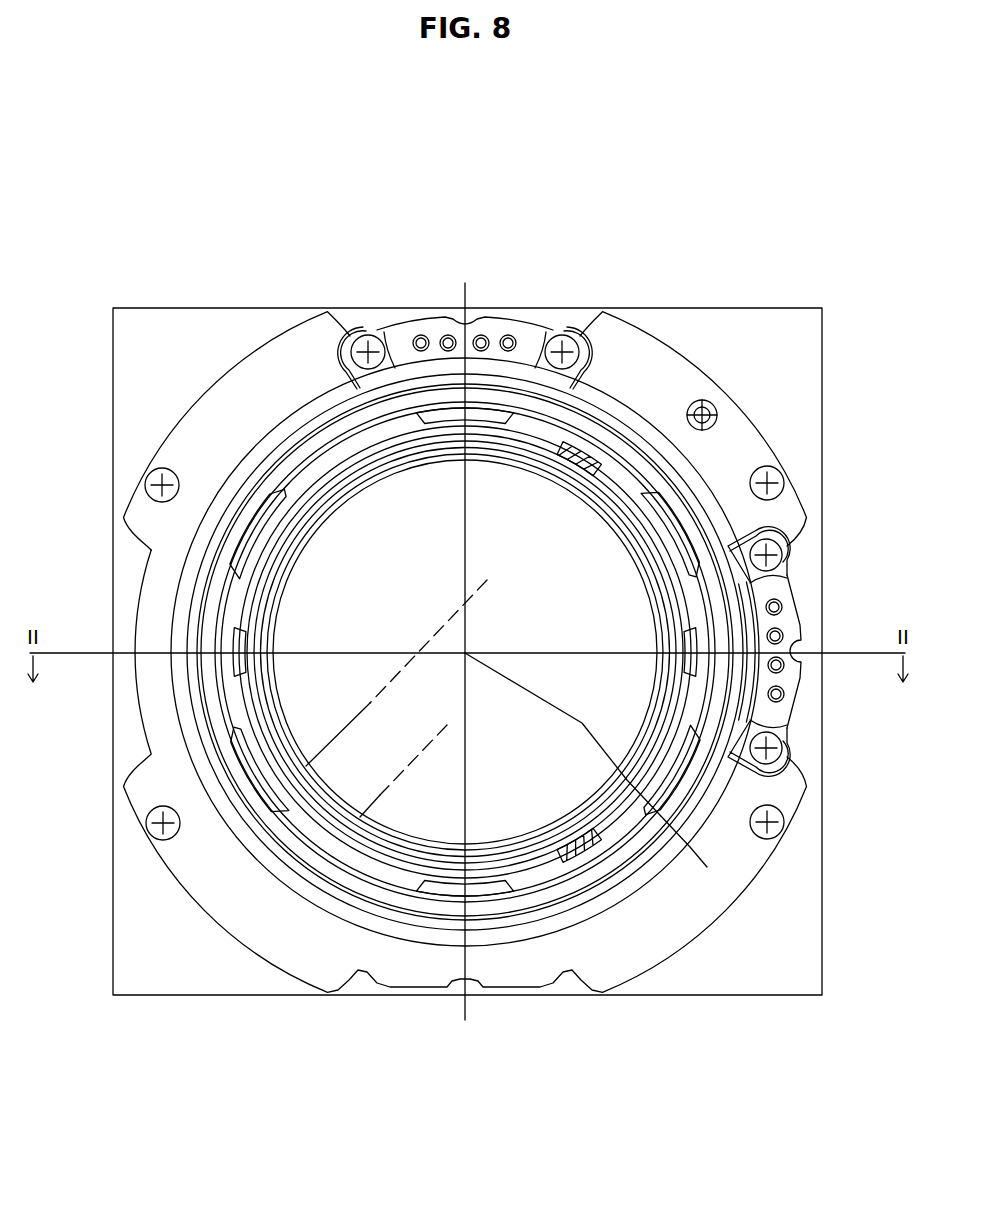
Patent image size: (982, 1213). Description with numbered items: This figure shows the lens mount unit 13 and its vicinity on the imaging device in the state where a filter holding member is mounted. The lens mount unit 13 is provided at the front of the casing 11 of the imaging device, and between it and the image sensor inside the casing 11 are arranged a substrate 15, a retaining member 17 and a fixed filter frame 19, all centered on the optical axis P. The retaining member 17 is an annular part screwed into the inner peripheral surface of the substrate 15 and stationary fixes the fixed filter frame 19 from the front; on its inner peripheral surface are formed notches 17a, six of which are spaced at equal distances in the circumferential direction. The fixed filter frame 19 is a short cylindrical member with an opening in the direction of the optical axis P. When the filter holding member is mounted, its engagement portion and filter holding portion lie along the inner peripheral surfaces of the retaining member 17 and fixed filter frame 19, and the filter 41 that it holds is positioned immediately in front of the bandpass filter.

The casing 11 is at (755, 370).
The lens mount unit 13 is at (727, 437).
The substrate 15 is at (682, 492).
The retaining member 17 is at (716, 606).
The notch 17a is at (440, 398).
The fixed filter frame 19 is at (680, 682).
The filter 41 is at (340, 720).
The optical axis P is at (707, 867).